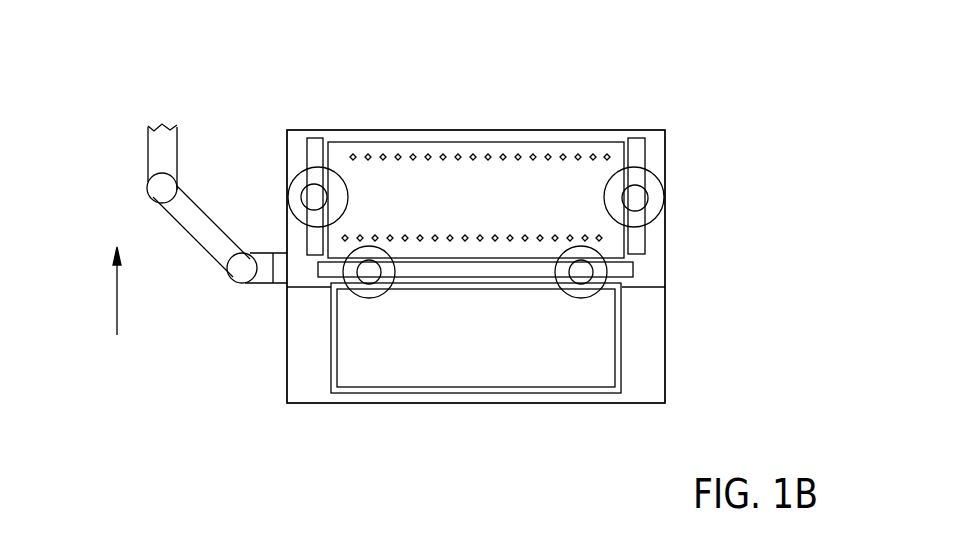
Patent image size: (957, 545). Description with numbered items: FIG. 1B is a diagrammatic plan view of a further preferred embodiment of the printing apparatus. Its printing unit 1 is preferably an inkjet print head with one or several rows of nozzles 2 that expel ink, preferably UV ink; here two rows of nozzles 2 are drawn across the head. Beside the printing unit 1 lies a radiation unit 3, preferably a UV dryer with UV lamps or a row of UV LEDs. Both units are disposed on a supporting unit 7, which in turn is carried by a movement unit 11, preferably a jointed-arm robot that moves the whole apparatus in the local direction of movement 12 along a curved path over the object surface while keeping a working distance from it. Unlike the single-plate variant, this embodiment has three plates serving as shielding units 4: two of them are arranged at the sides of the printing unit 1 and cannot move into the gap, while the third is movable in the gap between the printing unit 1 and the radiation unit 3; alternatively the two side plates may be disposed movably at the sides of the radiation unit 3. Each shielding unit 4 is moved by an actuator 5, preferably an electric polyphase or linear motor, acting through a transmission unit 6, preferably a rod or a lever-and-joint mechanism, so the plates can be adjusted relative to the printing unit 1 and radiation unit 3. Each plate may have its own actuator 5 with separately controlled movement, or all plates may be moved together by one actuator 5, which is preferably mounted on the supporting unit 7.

The printing unit 1 is at (536, 136).
The nozzles 2 is at (450, 238).
The radiation unit 3 is at (617, 347).
The shielding unit 4 is at (313, 138).
The actuator 5 is at (287, 193).
The transmission unit 6 is at (290, 210).
The supporting unit 7 is at (662, 148).
The movement unit 11 is at (162, 158).
The direction of movement 12 is at (117, 297).